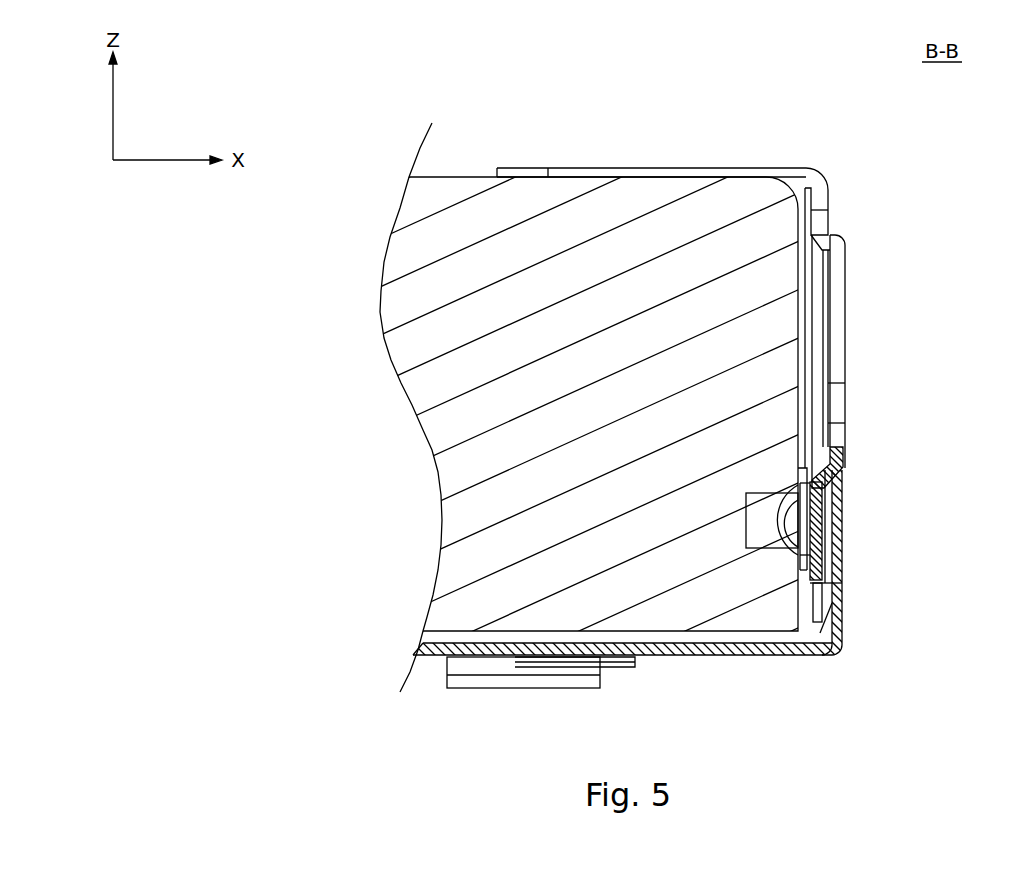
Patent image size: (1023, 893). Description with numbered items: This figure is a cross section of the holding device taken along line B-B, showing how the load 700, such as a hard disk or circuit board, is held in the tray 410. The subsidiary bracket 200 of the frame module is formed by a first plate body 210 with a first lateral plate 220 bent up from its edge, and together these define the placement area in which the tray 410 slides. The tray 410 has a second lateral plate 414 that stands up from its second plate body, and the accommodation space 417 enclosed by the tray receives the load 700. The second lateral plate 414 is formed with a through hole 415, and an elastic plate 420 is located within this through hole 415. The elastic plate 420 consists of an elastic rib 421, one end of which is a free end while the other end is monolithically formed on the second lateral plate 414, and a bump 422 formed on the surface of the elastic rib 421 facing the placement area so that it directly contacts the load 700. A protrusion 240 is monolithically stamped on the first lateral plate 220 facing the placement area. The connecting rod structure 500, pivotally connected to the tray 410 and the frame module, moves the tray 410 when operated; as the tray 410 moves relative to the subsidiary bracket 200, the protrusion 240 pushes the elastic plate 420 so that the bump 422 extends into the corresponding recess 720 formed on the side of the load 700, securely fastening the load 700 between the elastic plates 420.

The load 700 is at (472, 220).
The subsidiary bracket 200 is at (626, 474).
The first plate body 210 is at (803, 652).
The first lateral plate 220 is at (842, 606).
The connecting rod structure 500 is at (835, 328).
The second lateral plate 414 is at (818, 365).
The through hole 415 is at (838, 440).
The protrusion 240 is at (822, 512).
The tray 410 is at (803, 528).
The elastic plate 420 is at (815, 624).
The elastic rib 421 is at (805, 556).
The bump 422 is at (790, 548).
The recess 720 is at (740, 531).
The accommodation space 417 is at (614, 652).